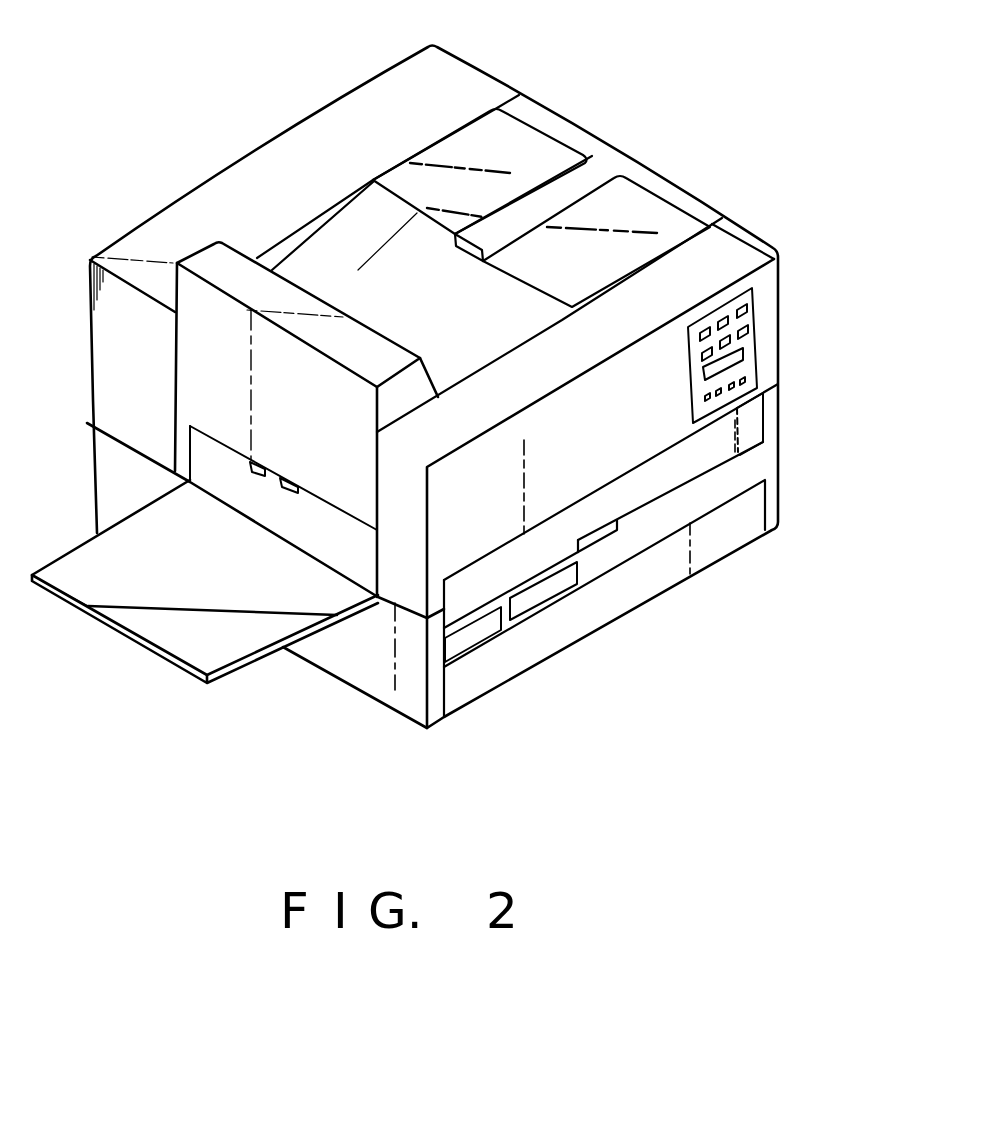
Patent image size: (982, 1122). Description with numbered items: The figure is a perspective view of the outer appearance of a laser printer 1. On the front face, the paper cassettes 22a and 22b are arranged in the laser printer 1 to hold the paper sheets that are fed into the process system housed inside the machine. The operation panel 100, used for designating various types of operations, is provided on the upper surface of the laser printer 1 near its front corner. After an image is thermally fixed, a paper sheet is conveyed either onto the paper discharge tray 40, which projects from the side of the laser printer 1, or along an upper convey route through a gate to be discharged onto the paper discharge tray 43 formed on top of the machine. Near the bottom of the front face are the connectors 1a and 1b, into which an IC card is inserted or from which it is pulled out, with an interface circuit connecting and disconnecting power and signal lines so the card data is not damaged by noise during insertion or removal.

The laser printer 1 is at (170, 88).
The paper discharge tray 43 is at (338, 243).
The operation panel 100 is at (755, 344).
The paper cassette 22b is at (756, 418).
The paper cassette 22a is at (757, 503).
The paper discharge tray 40 is at (127, 640).
The connector 1a is at (477, 635).
The connector 1b is at (544, 598).